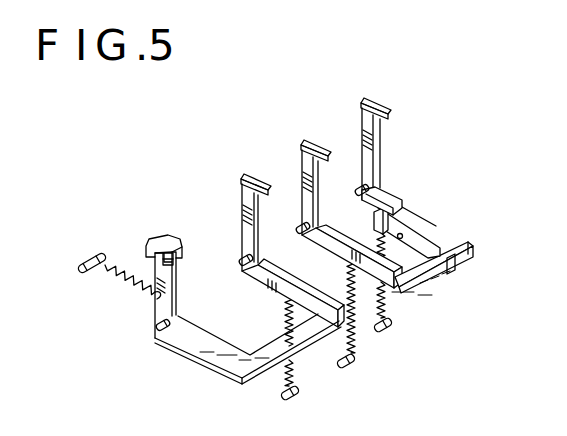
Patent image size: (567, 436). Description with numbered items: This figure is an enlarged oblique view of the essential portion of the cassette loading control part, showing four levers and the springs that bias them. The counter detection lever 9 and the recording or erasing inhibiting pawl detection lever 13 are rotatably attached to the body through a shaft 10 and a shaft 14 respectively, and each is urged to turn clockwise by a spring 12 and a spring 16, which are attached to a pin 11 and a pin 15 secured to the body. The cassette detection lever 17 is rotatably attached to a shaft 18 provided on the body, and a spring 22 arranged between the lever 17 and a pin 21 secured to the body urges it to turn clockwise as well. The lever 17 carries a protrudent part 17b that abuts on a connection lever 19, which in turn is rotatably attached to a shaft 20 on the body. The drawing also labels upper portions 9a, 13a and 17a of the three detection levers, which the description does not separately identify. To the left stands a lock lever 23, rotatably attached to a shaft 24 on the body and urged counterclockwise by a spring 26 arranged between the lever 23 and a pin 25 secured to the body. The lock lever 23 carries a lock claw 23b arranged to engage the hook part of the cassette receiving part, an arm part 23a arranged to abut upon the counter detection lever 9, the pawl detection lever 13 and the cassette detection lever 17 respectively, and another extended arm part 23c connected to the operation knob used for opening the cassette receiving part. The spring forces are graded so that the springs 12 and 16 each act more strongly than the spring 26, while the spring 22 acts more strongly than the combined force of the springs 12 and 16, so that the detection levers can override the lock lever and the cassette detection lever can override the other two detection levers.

The counter detection lever 9 is at (237, 194).
The top cap of post 9 9a is at (263, 186).
The shaft 10 is at (241, 257).
The pin 11 is at (286, 399).
The spring 12 is at (293, 363).
The recording or erasing inhibiting pawl detection lever 13 is at (301, 158).
The top cap of post 13 13a is at (324, 151).
The shaft 14 is at (299, 226).
The pin 15 is at (347, 366).
The spring 16 is at (358, 337).
The cassette detection lever 17 is at (391, 125).
The top cap of post 17 17a is at (389, 113).
The protrudent part 17b is at (395, 201).
The shaft 18 is at (357, 186).
The connection lever 19 is at (430, 222).
The shaft 20 is at (400, 216).
The pin 21 is at (392, 326).
The spring 22 is at (448, 240).
The lock lever 23 is at (224, 305).
The arm part 23a is at (242, 376).
The lock claw 23b is at (160, 247).
The arm part 23c is at (176, 262).
The shaft 24 is at (163, 331).
The pin 25 is at (85, 258).
The spring 26 is at (120, 285).